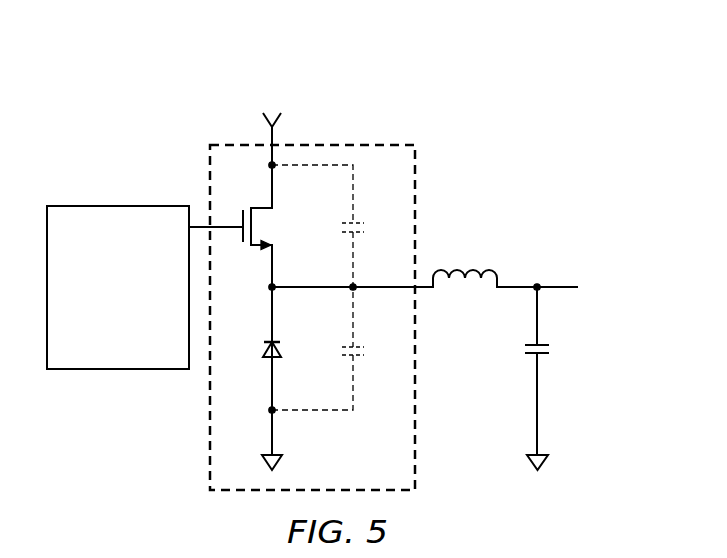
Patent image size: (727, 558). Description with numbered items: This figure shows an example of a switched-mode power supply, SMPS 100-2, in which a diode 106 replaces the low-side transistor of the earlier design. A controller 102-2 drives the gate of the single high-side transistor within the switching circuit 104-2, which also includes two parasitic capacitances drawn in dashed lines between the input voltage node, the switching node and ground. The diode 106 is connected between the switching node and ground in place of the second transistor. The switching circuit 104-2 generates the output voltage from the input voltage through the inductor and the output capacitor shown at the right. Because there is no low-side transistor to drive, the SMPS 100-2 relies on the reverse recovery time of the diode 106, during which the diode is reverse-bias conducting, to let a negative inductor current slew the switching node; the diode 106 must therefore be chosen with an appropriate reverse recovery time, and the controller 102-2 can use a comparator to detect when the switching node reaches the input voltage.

The SMPS 100-2 is at (189, 58).
The controller 102-2 is at (148, 317).
The switching circuit 104-2 is at (371, 139).
The diode 106 is at (268, 342).